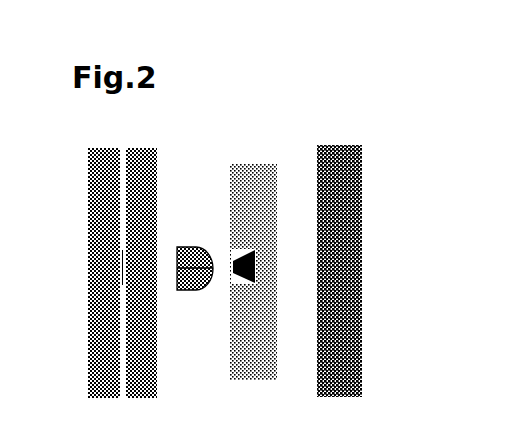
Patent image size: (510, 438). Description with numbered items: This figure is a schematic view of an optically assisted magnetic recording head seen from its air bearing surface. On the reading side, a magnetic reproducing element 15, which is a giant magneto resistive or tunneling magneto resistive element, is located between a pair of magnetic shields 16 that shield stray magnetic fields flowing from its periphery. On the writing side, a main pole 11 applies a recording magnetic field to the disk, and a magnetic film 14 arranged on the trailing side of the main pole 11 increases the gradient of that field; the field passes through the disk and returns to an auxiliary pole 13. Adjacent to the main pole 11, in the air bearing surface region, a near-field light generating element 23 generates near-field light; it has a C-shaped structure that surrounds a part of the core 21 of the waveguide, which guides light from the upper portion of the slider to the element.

The main pole 11 is at (231, 284).
The auxiliary pole 13 is at (356, 176).
The magnetic film 14 is at (258, 164).
The magnetic reproducing element 15 is at (122, 275).
The magnetic shields 16 is at (143, 148).
The core 21 is at (183, 292).
The near-field light generating element 23 is at (186, 247).